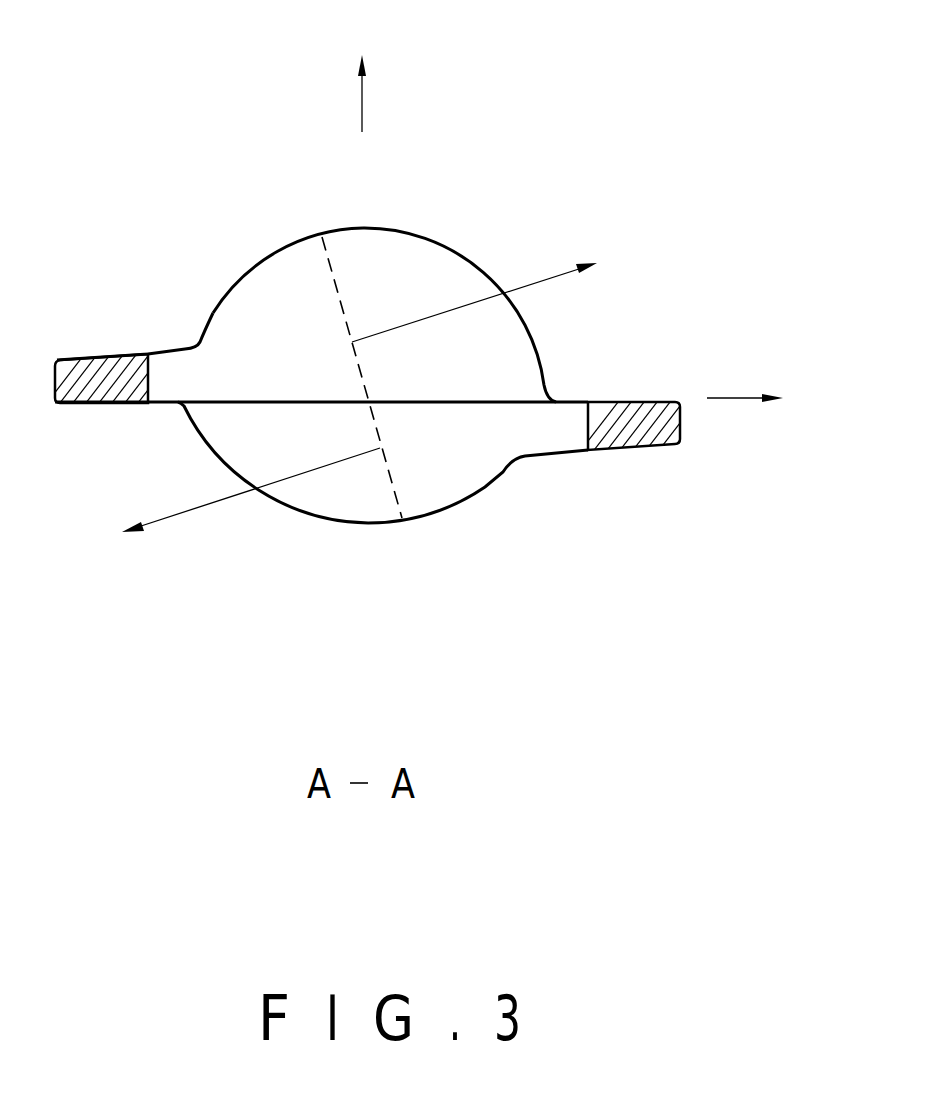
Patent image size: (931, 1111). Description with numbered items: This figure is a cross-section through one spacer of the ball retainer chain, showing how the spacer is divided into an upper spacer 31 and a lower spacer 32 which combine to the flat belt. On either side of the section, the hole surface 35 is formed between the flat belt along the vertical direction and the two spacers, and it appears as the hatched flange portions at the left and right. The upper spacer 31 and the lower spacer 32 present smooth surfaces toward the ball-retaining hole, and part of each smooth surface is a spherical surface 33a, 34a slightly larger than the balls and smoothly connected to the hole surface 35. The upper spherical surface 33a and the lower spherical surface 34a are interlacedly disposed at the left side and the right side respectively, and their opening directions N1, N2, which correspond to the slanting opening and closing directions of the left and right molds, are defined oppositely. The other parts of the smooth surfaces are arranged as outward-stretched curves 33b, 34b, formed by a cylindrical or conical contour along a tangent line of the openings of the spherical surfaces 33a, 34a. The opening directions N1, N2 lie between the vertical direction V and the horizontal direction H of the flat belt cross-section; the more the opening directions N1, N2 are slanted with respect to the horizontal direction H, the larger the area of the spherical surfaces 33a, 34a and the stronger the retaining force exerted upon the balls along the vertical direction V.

The upper spacer 31 is at (306, 260).
The lower spacer 32 is at (383, 530).
The upper spherical surface 33a is at (273, 308).
The outward-stretched curve of upper spacer 33b is at (437, 302).
The lower spherical surface 34a is at (448, 462).
The outward-stretched curve of lower spacer 34b is at (322, 500).
The hole surface 35 is at (175, 367).
The opening direction of upper spherical surface N1 is at (492, 283).
The opening direction of lower spherical surface N2 is at (227, 501).
The vertical direction V is at (368, 74).
The horizontal direction H is at (756, 386).